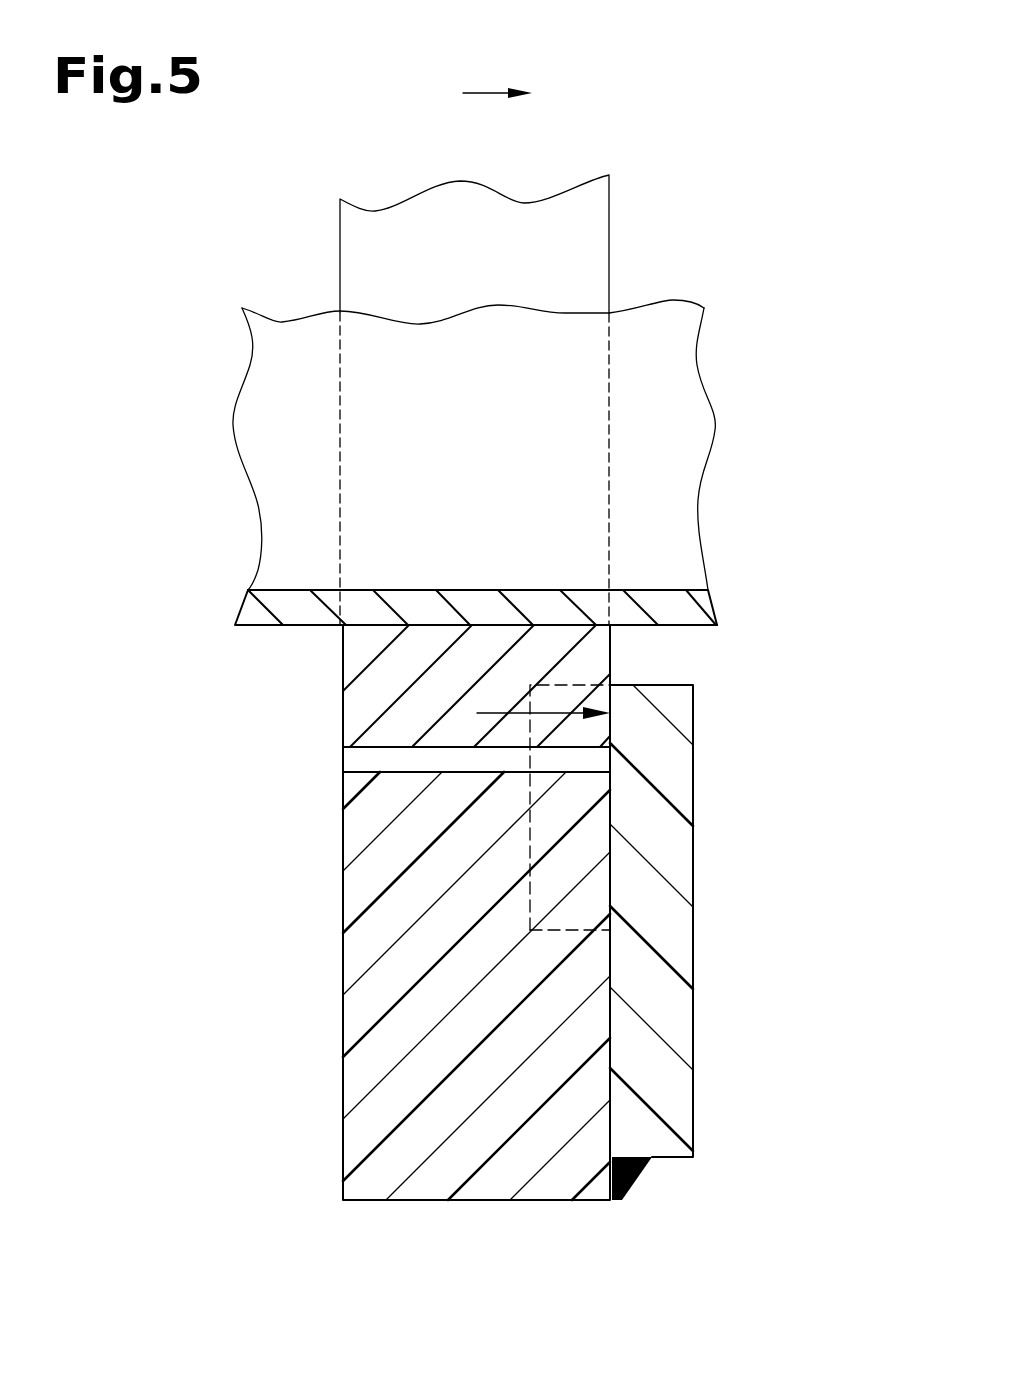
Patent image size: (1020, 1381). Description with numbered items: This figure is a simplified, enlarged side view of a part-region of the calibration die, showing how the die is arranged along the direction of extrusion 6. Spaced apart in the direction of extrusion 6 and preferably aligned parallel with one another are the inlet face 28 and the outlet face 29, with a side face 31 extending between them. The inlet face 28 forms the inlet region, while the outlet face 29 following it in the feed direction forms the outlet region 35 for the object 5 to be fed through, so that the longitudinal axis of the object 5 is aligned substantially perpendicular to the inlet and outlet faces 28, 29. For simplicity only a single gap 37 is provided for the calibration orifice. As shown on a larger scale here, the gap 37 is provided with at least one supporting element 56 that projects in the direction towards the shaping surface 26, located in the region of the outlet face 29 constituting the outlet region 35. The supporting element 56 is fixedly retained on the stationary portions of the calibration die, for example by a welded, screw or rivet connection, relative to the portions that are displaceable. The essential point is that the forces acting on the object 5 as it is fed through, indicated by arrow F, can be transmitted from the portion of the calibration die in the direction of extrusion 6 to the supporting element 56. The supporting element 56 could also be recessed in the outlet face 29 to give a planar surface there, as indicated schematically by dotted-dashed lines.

The object 5 is at (658, 606).
The direction of extrusion 6 is at (486, 81).
The shaping surface 26 is at (484, 615).
The inlet face 28 is at (343, 1080).
The outlet face 29 is at (610, 246).
The side face 31 is at (482, 1200).
The outlet region 35 is at (648, 636).
The gap 37 is at (326, 763).
The supporting element 56 is at (577, 850).
The arrow indicating forces F is at (490, 716).